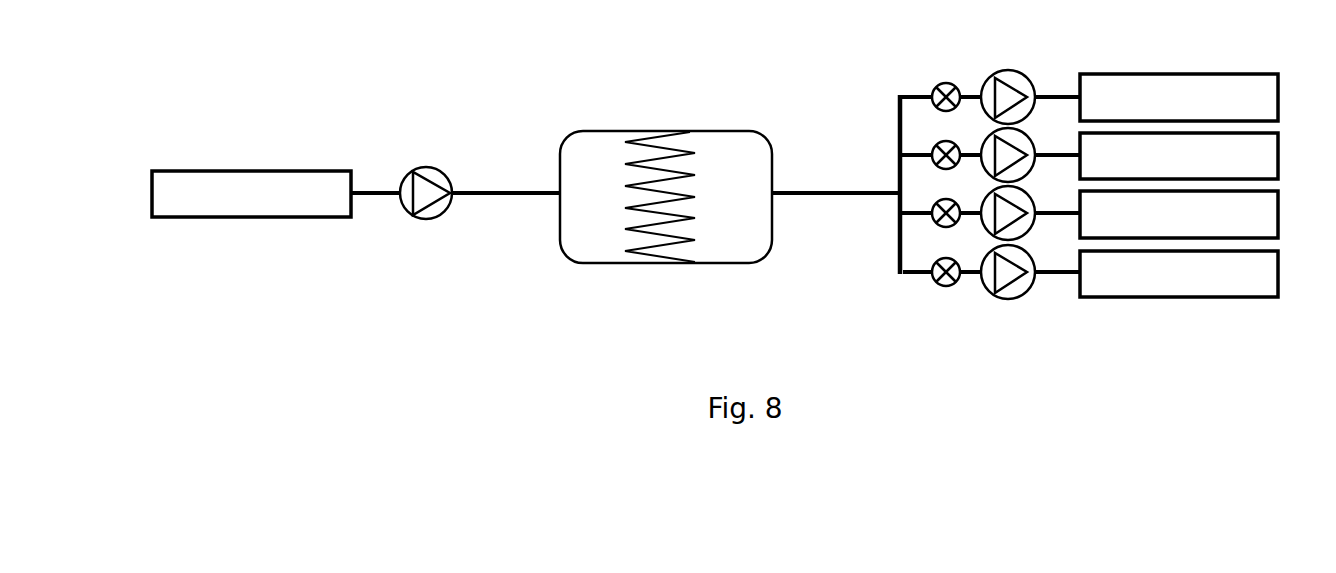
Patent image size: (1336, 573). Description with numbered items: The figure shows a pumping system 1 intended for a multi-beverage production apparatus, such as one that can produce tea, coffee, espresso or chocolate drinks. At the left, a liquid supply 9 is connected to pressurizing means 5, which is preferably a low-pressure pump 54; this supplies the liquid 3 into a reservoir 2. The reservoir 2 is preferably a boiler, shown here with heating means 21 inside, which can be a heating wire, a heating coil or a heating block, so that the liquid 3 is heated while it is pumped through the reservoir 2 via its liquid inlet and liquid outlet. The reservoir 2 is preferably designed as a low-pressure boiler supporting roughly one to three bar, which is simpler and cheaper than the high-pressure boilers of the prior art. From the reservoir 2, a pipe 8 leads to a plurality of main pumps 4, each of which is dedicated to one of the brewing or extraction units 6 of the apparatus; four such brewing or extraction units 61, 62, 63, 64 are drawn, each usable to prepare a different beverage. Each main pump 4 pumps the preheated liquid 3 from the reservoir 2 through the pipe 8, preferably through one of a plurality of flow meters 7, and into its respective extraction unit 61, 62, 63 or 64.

The pumping system 1 is at (485, 92).
The reservoir 2 is at (773, 160).
The liquid 3 is at (684, 201).
The main pump 4 is at (1008, 80).
The pressurizing means 5 is at (452, 212).
The brewing or extraction units 6 is at (1199, 185).
The flow meter 7 is at (949, 86).
The pipe 8 is at (839, 198).
The liquid supply 9 is at (188, 213).
The heating means 21 is at (693, 152).
The low-pressure pump 54 is at (428, 215).
The brewing or extraction unit 61 is at (1179, 97).
The brewing or extraction unit 62 is at (1179, 156).
The brewing or extraction unit 63 is at (1179, 214).
The brewing or extraction unit 64 is at (1179, 274).